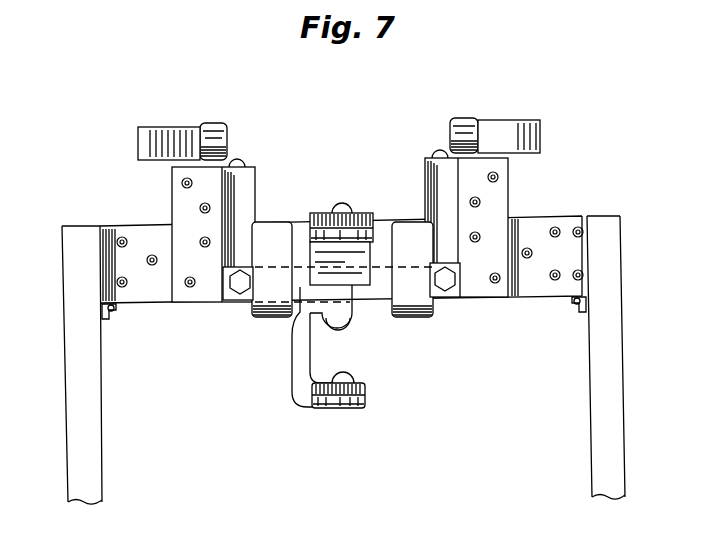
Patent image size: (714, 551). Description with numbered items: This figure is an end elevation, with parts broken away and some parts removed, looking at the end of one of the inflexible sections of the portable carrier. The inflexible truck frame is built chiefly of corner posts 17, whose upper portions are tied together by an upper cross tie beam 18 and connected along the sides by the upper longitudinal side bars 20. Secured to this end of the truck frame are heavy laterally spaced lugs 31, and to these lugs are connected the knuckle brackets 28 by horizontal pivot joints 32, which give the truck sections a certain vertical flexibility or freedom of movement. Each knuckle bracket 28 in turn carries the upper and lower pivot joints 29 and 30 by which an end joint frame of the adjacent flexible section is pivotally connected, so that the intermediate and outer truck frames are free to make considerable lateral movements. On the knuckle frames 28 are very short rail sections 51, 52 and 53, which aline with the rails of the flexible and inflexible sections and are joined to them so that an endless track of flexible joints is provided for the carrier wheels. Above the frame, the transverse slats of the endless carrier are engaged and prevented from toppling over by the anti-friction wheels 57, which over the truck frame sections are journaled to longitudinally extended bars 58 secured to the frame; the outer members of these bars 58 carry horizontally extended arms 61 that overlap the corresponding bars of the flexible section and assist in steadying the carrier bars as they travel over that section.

The corner posts 17 is at (72, 428).
The upper cross tie beams 18 is at (538, 223).
The upper longitudinal side bars 20 is at (114, 311).
The knuckle brackets 28 is at (300, 313).
The upper pivot joint 29 is at (357, 232).
The lower pivot joint 30 is at (330, 402).
The laterally spaced lugs 31 is at (268, 240).
The horizontal pivot joints 32 is at (238, 300).
The short rail section 51 is at (342, 208).
The short rail section 52 is at (345, 327).
The short rail section 53 is at (350, 378).
The anti-friction wheels 57 is at (212, 130).
The longitudinally extended bars 58 is at (236, 160).
The horizontally extended arms 61 is at (150, 137).